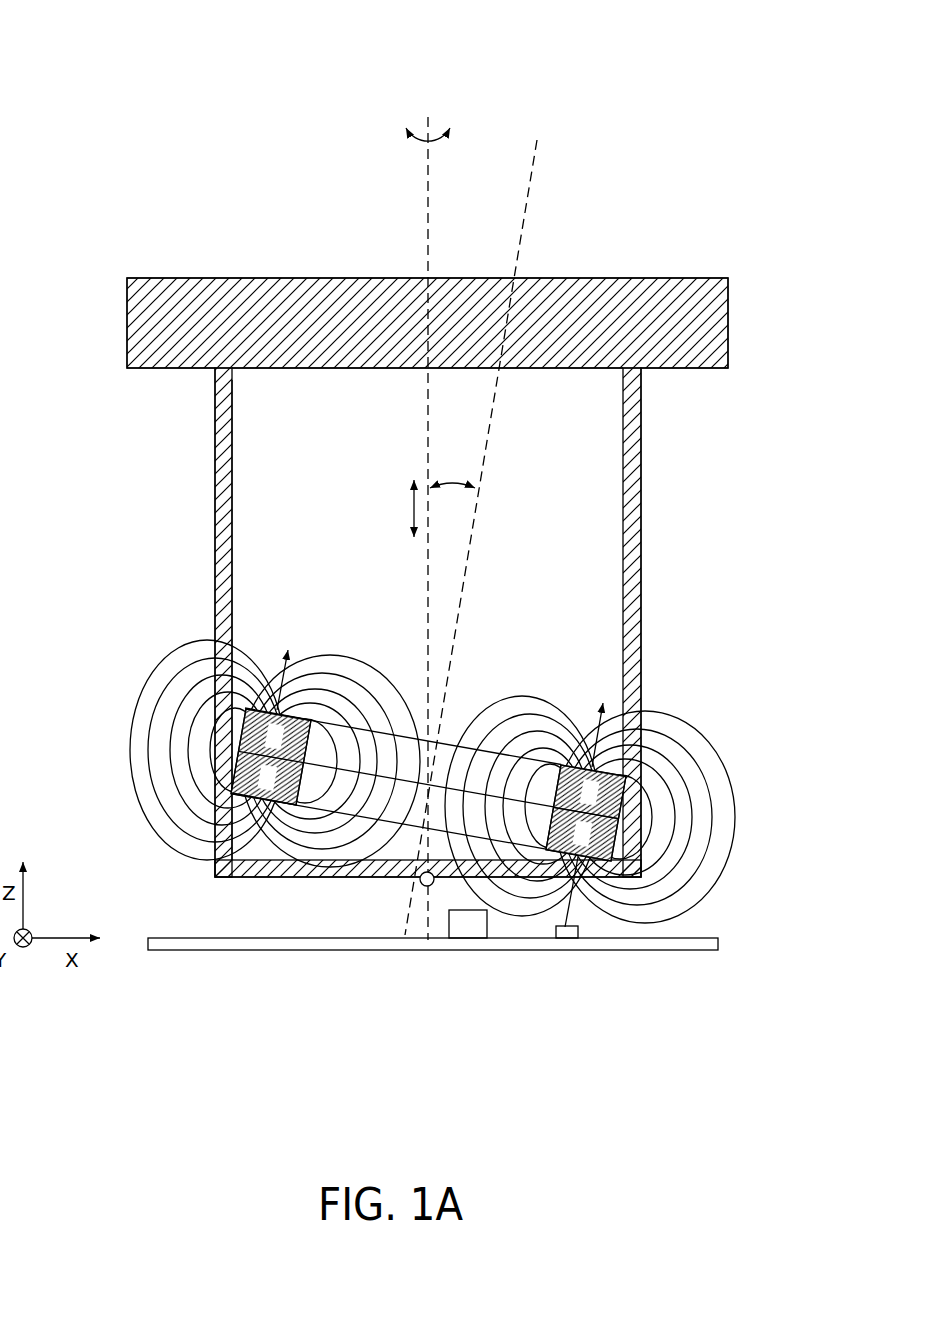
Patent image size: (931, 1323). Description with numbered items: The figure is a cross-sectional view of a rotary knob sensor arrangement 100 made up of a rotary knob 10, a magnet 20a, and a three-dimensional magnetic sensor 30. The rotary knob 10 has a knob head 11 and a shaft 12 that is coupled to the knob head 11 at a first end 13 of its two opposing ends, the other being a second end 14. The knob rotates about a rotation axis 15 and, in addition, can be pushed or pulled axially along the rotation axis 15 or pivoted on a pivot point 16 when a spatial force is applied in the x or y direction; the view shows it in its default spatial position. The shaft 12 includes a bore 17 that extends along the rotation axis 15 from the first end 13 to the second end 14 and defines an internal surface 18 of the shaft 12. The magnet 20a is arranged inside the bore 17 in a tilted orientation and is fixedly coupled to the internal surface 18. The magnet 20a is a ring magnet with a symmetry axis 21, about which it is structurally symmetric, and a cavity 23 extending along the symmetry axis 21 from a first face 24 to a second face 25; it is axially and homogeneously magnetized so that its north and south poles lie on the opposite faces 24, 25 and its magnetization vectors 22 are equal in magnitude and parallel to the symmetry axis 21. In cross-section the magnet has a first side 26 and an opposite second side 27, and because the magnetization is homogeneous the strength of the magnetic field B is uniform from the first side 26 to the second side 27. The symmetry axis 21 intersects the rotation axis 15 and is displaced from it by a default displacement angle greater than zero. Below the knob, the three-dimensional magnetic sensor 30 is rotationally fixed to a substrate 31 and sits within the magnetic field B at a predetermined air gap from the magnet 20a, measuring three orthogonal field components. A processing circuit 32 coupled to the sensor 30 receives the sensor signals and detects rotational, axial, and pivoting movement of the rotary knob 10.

The rotary knob sensor arrangement 100 is at (120, 66).
The rotary knob 10 is at (135, 277).
The knob head 11 is at (127, 326).
The shaft 12 is at (215, 430).
The first end 13 is at (570, 372).
The second end 14 is at (238, 882).
The rotation axis 15 is at (428, 205).
The pivot point 16 is at (421, 882).
The bore 17 is at (572, 570).
The internal surface 18 is at (233, 565).
The magnet 20a is at (603, 817).
The symmetry axis 21 is at (523, 225).
The magnetization vectors 22 is at (295, 645).
The cavity 23 is at (442, 760).
The first face 24 is at (305, 713).
The second face 25 is at (281, 815).
The first side 26 is at (233, 728).
The second side 27 is at (627, 795).
The 3D magnetic sensor 30 is at (567, 932).
The substrate 31 is at (718, 946).
The processing circuit 32 is at (468, 930).
The magnetic field B is at (172, 652).